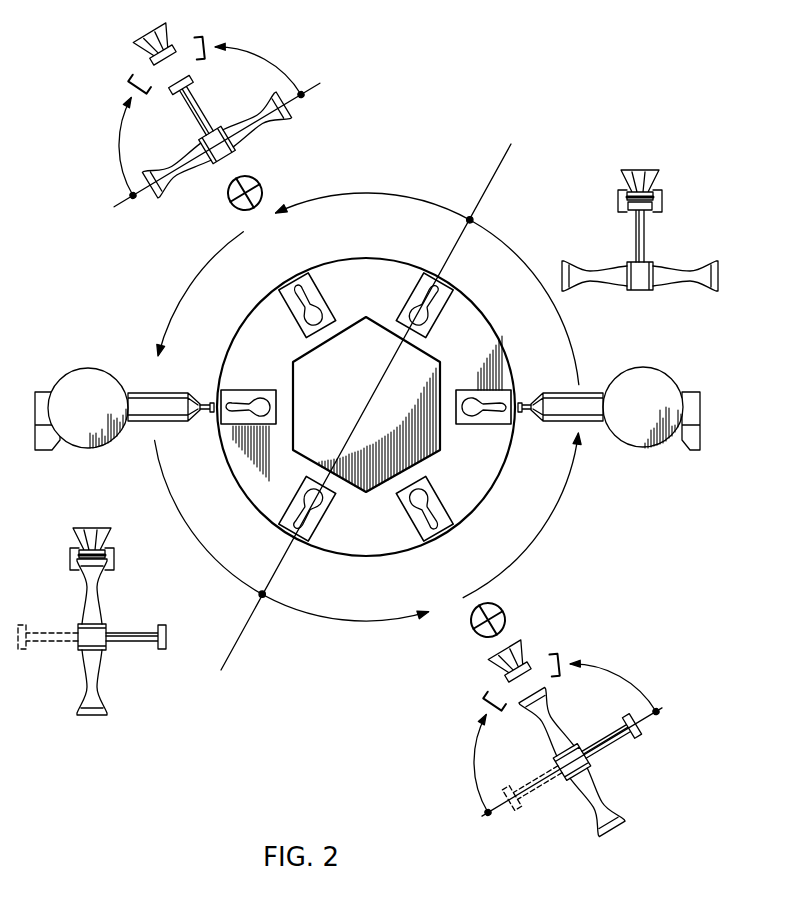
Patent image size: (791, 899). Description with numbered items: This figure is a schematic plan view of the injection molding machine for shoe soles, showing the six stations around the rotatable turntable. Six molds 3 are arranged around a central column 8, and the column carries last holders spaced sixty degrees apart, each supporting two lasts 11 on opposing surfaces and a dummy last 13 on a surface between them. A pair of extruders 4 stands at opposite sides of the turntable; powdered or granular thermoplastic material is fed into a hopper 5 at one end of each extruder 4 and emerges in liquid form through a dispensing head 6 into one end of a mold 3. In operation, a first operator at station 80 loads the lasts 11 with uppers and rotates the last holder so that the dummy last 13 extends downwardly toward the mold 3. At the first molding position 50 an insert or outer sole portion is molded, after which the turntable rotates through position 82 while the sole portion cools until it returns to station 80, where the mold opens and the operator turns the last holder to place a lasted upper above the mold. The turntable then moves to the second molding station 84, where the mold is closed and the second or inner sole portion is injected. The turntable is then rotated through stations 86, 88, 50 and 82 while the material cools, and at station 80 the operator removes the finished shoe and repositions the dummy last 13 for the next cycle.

The mold 3 is at (304, 330).
The extruder 4 is at (155, 393).
The hopper 5 is at (100, 381).
The dispensing head 6 is at (208, 412).
The central column 8 is at (428, 447).
The last 11 is at (602, 272).
The dummy last 13 is at (637, 242).
The first molding position 50 is at (466, 389).
The station 80 is at (320, 290).
The position 82 is at (404, 307).
The second molding station 84 is at (258, 389).
The station 86 is at (312, 542).
The station 88 is at (420, 542).